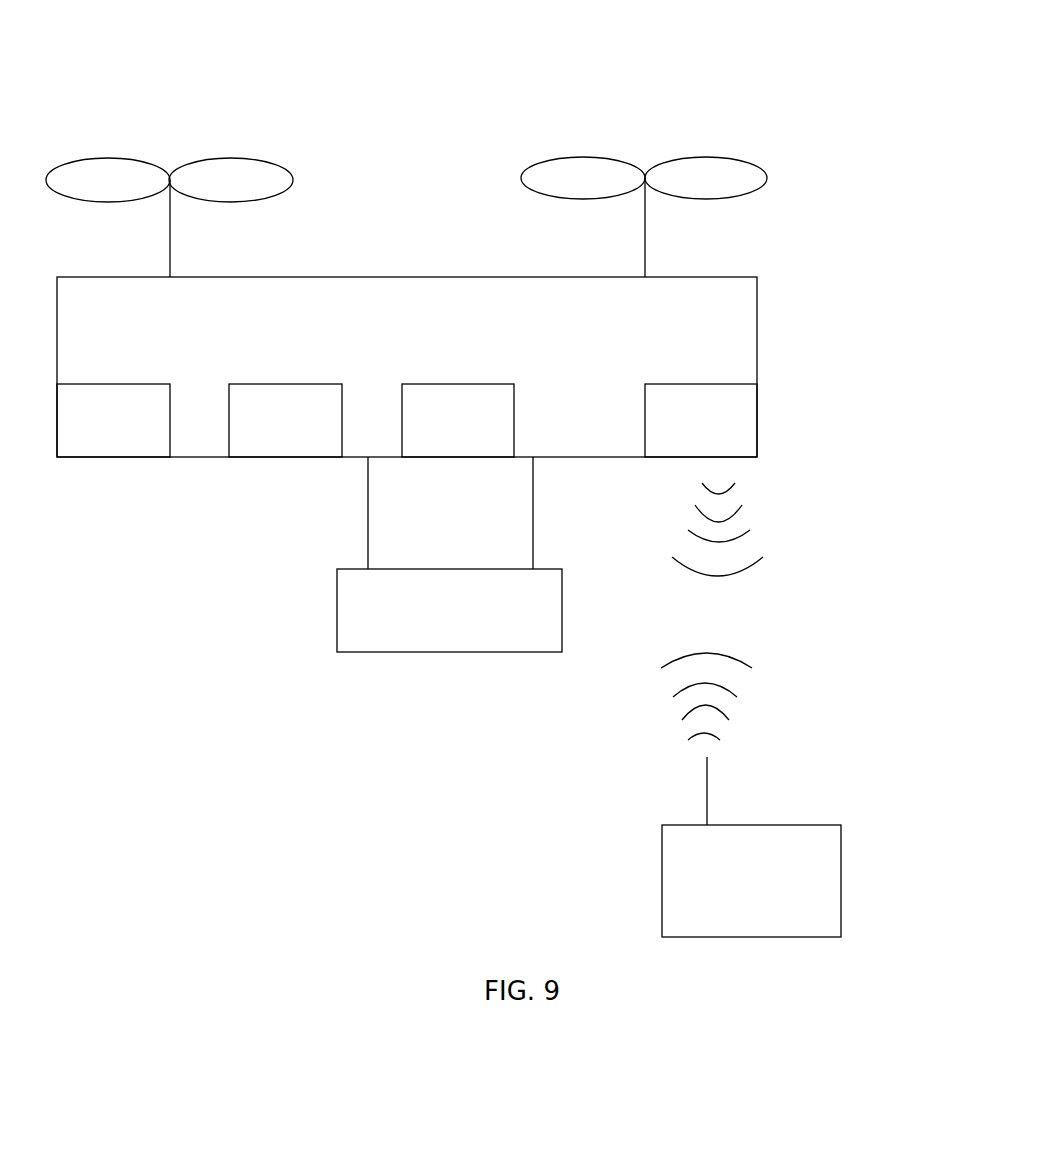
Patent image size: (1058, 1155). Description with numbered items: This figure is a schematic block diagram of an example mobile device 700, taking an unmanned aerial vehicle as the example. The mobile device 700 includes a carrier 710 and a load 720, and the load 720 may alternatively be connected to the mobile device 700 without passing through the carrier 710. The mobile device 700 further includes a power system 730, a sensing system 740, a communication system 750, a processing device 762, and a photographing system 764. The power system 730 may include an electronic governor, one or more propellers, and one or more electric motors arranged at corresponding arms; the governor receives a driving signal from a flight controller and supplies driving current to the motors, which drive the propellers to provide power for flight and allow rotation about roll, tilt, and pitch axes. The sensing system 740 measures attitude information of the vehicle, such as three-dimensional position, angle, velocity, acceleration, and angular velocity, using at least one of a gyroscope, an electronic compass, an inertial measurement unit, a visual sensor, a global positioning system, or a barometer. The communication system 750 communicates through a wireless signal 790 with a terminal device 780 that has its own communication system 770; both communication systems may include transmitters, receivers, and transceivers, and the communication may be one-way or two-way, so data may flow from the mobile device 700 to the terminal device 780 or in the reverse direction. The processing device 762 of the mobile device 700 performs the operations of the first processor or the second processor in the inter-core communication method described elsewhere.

The mobile device 700 is at (728, 66).
The carrier 710 is at (364, 504).
The load 720 is at (425, 624).
The power system 730 is at (222, 148).
The sensing system 740 is at (88, 434).
The communication system 750 is at (676, 434).
The processing device 762 is at (433, 434).
The photographing system 764 is at (260, 434).
The communication system 770 is at (707, 781).
The terminal device 780 is at (726, 897).
The wireless signal 790 is at (776, 553).